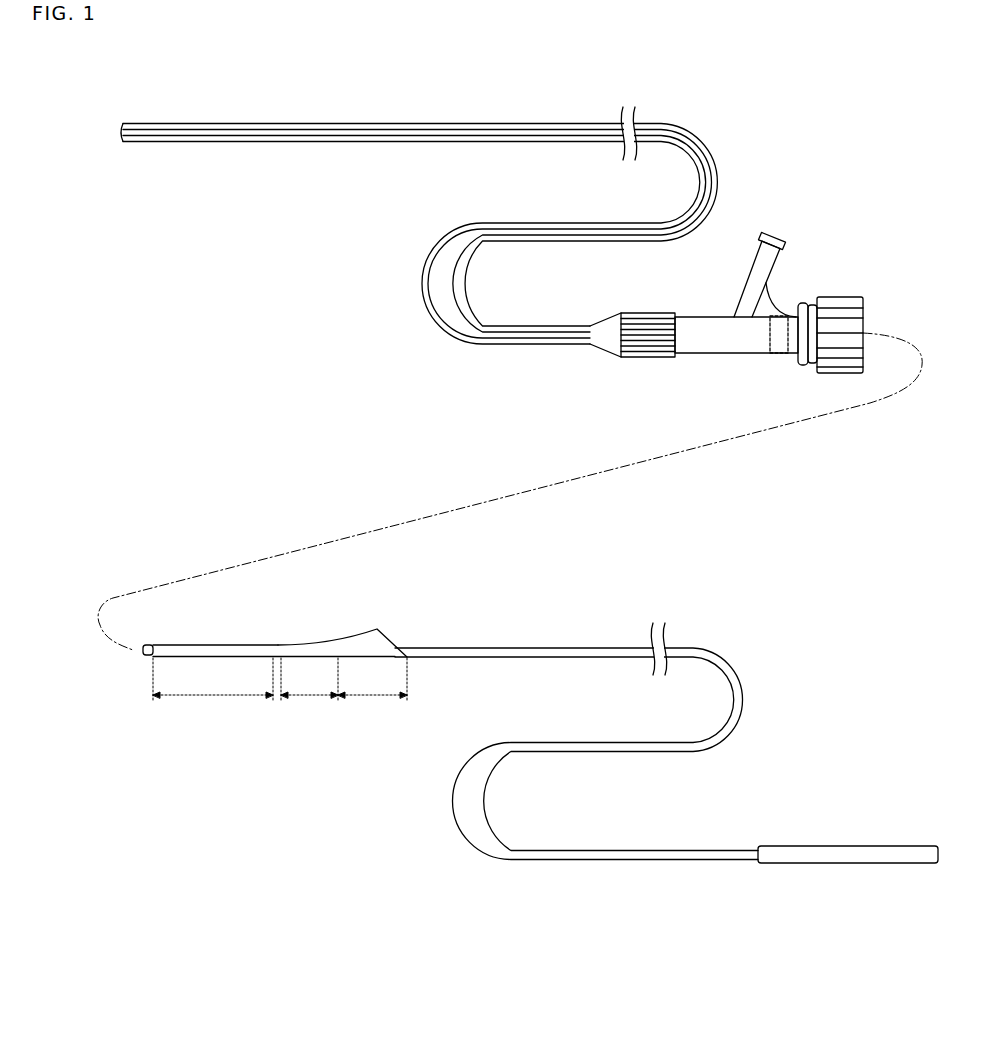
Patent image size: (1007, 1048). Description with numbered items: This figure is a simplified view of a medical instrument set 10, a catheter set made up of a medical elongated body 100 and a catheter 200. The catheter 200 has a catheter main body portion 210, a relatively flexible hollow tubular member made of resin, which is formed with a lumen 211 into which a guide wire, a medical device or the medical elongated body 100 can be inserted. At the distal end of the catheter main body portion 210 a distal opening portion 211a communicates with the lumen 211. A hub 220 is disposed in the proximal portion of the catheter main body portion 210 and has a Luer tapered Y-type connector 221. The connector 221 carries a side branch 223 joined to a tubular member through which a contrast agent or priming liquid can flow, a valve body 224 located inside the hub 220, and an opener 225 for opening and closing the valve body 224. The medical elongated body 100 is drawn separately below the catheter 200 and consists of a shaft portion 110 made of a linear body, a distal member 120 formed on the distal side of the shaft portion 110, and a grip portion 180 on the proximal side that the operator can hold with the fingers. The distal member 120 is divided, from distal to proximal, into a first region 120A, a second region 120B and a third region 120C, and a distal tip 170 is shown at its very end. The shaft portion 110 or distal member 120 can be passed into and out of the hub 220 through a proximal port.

The medical instrument set 10 is at (720, 483).
The medical elongated body 100 is at (522, 640).
The shaft portion 110 is at (613, 870).
The distal member 120 is at (312, 632).
The first region 120A is at (213, 695).
The second region 120B is at (309, 695).
The third region 120C is at (372, 695).
The distal tip 170 is at (150, 647).
The grip portion 180 is at (835, 870).
The catheter 200 is at (505, 353).
The catheter main body portion 210 is at (305, 123).
The lumen 211 is at (381, 123).
The distal opening portion 211a is at (123, 128).
The hub 220 is at (668, 310).
The Luer tapered connector 221 is at (698, 342).
The side branch 223 is at (770, 260).
The valve body 224 is at (775, 357).
The opener 225 is at (843, 302).